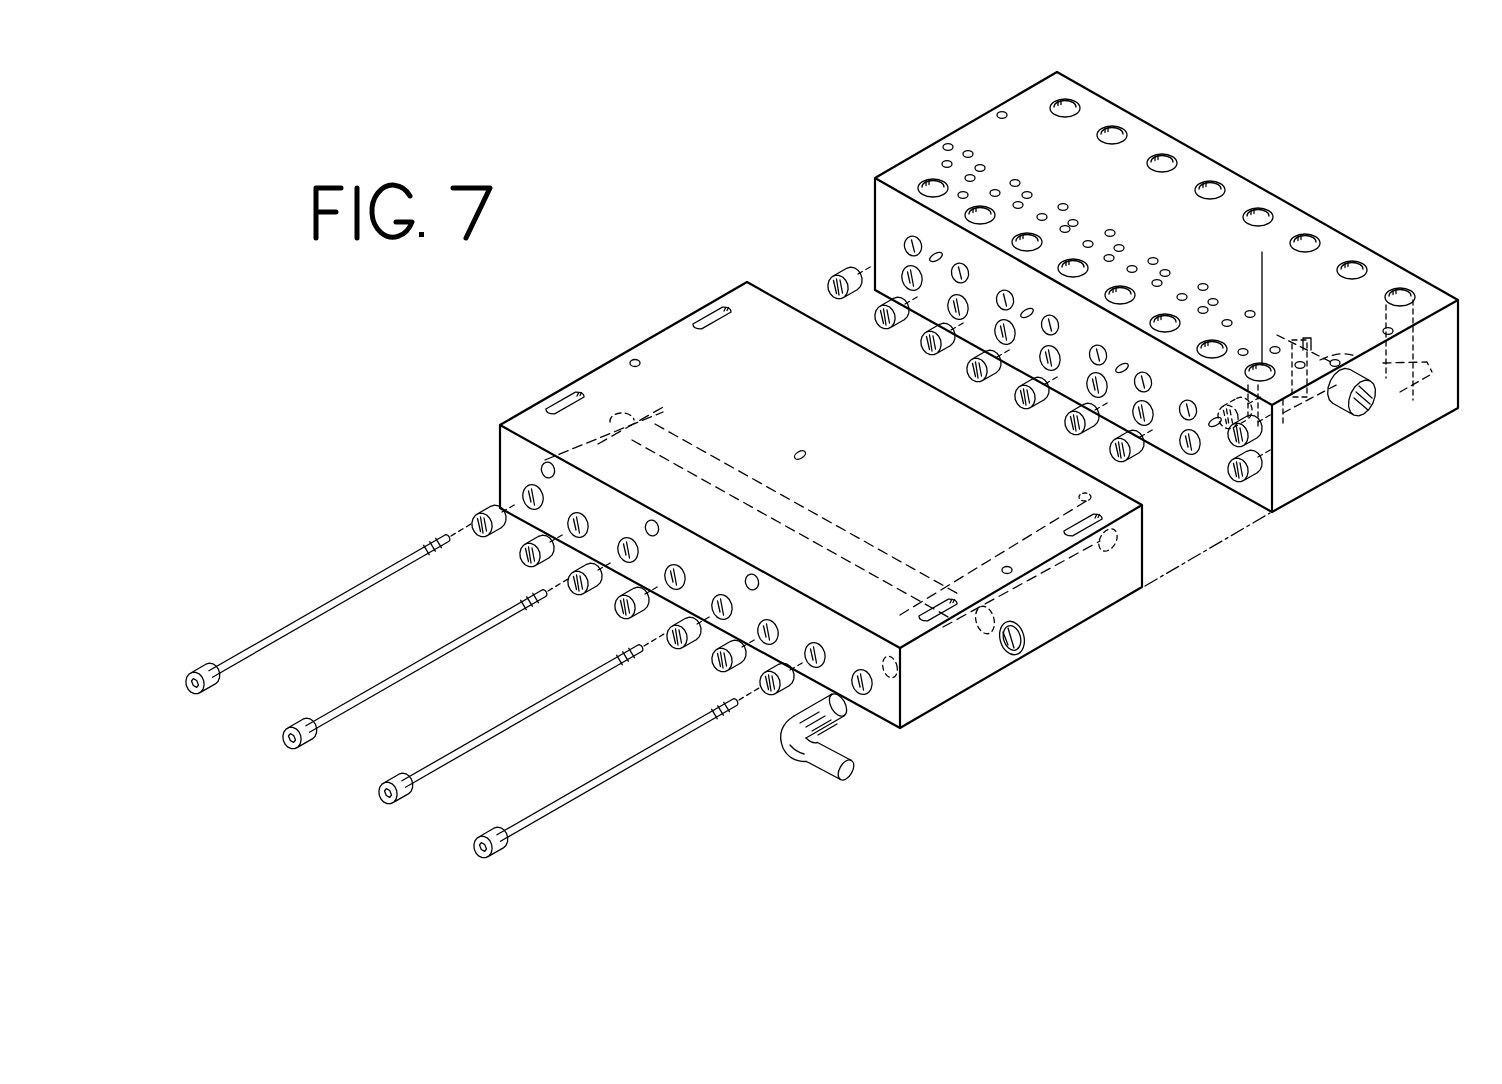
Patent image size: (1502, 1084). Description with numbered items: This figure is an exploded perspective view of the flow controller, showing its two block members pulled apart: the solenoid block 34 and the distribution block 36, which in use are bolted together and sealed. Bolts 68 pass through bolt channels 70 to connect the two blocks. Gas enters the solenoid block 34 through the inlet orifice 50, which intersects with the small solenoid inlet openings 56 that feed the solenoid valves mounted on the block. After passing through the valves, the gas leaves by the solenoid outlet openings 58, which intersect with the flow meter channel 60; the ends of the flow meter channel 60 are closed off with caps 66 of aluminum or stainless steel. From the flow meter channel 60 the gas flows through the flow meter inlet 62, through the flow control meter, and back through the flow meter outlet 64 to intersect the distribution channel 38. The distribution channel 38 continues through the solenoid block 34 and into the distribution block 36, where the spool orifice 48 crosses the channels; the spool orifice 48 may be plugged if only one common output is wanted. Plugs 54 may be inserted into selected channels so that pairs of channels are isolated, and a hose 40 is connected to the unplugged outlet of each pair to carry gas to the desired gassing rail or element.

The solenoid block 34 is at (1154, 112).
The distribution block 36 is at (655, 325).
The distribution channel 38 is at (1053, 575).
The hose 40 is at (826, 757).
The spool orifice 48 is at (1012, 656).
The inlet orifice 50 is at (1372, 410).
The plug 54 is at (770, 695).
The solenoid inlet opening 56 is at (1302, 342).
The solenoid outlet opening 58 is at (1363, 374).
The flow meter channel 60 is at (1285, 415).
The flow meter inlet 62 is at (1268, 342).
The flow meter outlet 64 is at (1400, 298).
The cap 66 is at (830, 280).
The bolt 68 is at (557, 806).
The bolt channel 70 is at (546, 466).